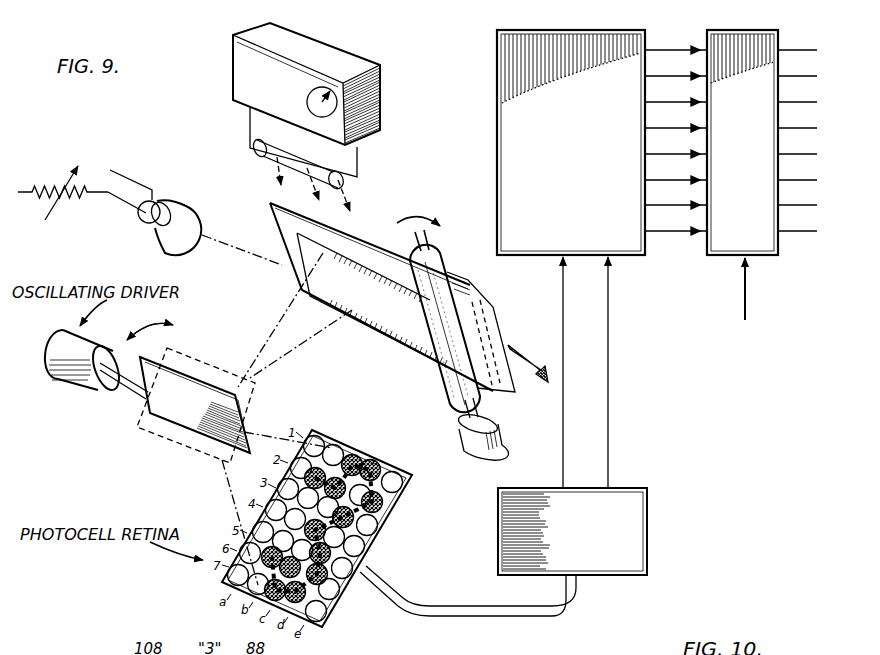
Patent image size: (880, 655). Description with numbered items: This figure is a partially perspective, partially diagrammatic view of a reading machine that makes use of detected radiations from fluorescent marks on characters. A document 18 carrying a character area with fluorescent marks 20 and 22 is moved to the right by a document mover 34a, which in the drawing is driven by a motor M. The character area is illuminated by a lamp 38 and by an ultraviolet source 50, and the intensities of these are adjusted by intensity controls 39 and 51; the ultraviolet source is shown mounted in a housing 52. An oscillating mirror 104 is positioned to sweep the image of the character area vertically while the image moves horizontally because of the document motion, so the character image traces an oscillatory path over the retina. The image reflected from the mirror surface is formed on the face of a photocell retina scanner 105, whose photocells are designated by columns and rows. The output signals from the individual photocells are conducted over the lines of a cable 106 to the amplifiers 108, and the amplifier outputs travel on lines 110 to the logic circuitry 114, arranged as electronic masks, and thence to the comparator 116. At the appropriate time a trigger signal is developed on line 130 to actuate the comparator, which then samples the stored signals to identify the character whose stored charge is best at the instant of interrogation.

The document 18 is at (297, 245).
The fluorescent mark 20 is at (338, 483).
The fluorescent mark 22 is at (297, 567).
The document mover 34a is at (443, 258).
The lamp 38 is at (185, 200).
The intensity control 39 is at (47, 187).
The ultraviolet source 50 is at (258, 156).
The intensity control 51 is at (307, 97).
The housing 52 is at (307, 37).
The oscillating mirror 104 is at (182, 425).
The photocell retina scanner 105 is at (373, 537).
The cable 106 is at (430, 608).
The amplifiers 108 is at (648, 543).
The lines 110 is at (610, 442).
The logic circuitry 114 is at (566, 29).
The comparator 116 is at (734, 28).
The trigger line 130 is at (746, 295).
The motor M is at (500, 429).